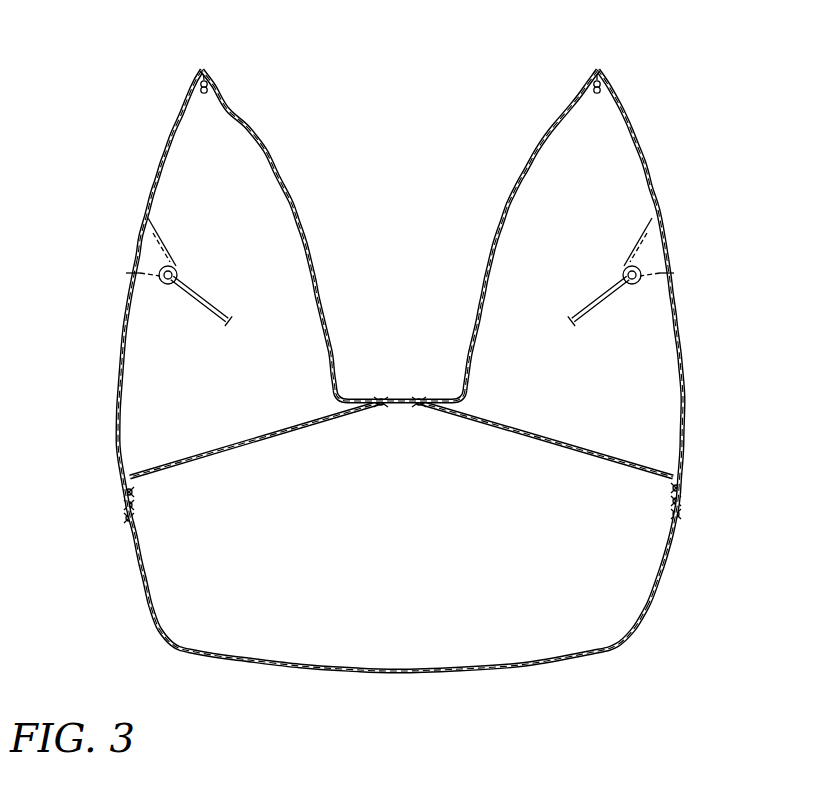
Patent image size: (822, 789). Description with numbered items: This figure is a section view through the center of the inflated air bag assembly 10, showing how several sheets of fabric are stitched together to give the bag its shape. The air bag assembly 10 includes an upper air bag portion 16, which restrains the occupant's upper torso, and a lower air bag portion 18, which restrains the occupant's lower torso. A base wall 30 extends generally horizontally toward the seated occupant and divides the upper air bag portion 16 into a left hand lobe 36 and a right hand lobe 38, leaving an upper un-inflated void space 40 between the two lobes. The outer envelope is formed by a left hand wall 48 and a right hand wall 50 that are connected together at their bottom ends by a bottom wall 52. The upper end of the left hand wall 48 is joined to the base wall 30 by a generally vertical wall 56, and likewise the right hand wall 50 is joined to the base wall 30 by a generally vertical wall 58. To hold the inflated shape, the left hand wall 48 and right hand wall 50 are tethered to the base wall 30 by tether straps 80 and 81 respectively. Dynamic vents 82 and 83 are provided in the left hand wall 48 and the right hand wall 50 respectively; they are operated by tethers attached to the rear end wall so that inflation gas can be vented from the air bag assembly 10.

The air bag assembly 10 is at (636, 82).
The upper air bag portion 16 is at (714, 280).
The lower air bag portion 18 is at (674, 594).
The base wall 30 is at (398, 396).
The left hand lobe 36 is at (207, 177).
The right hand lobe 38 is at (603, 177).
The upper un-inflated void space 40 is at (377, 210).
The left hand wall 48 is at (120, 440).
The right hand wall 50 is at (683, 438).
The bottom wall 52 is at (400, 673).
The generally vertical wall 56 is at (267, 140).
The generally vertical wall 58 is at (533, 143).
The tether strap 80 is at (207, 453).
The tether strap 81 is at (590, 453).
The dynamic vent 82 is at (152, 260).
The dynamic vent 83 is at (653, 247).